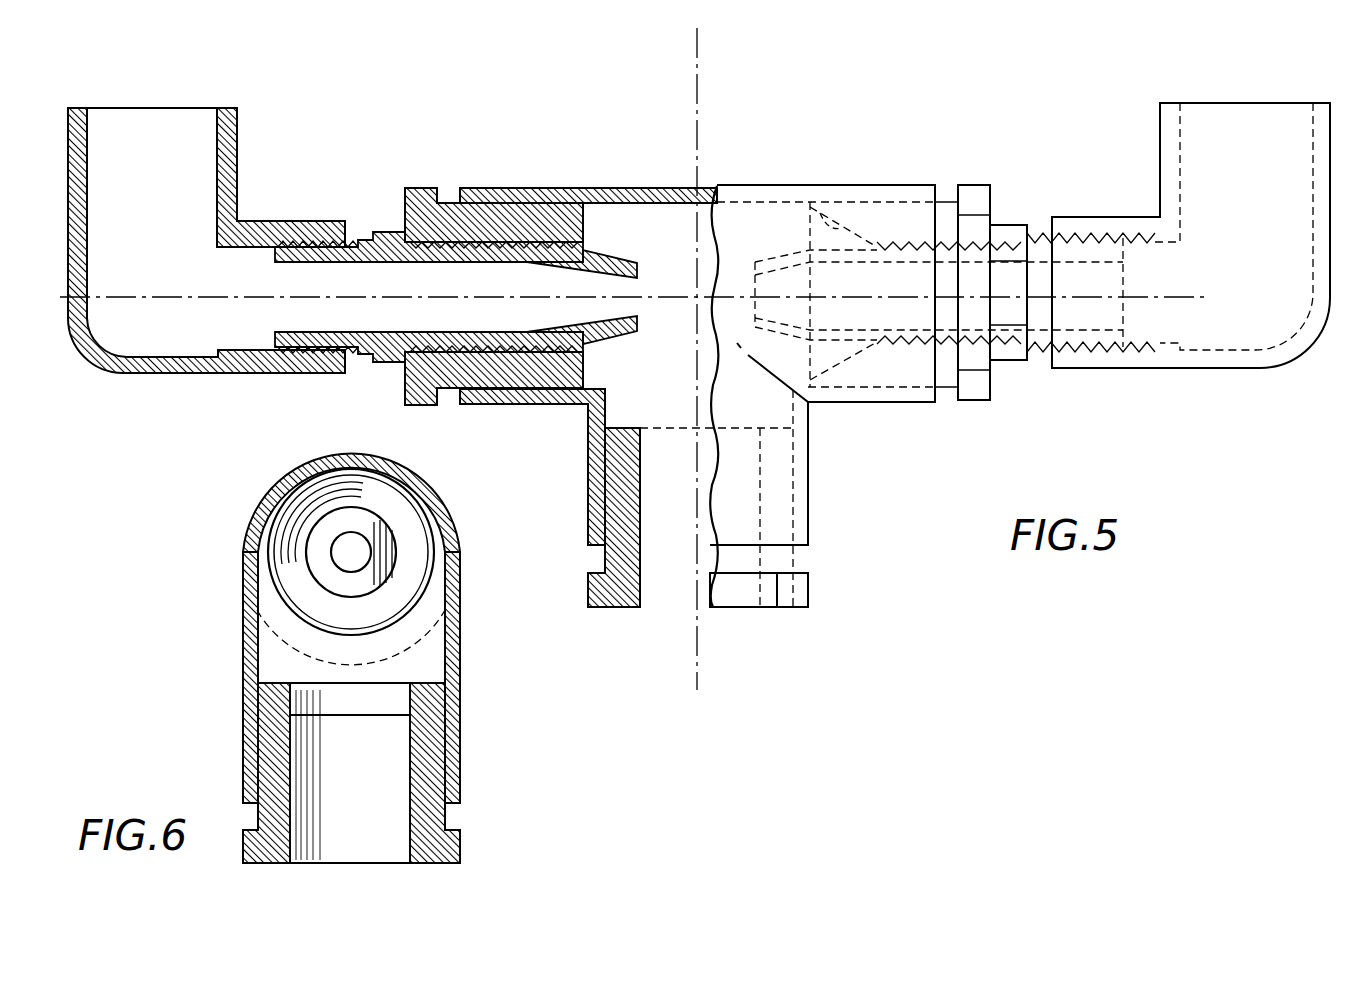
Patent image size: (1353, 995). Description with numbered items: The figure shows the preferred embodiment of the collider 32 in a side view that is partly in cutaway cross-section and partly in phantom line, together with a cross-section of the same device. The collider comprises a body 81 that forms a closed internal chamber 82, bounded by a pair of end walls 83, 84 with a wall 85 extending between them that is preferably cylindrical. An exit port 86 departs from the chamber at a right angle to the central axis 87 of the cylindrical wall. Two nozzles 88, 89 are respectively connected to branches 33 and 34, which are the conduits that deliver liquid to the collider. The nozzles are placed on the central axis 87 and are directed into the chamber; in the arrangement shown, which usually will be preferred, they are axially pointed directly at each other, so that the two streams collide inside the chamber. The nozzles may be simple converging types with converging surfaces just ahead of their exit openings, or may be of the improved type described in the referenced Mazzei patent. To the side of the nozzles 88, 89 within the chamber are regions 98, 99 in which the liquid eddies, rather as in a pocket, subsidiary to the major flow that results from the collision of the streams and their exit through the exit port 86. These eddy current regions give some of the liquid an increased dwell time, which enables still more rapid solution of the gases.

In FIG. 5, the collider 32 is at (822, 460).
In FIG. 6, the collider 32 is at (212, 571).
In FIG. 5, the branch 33 is at (148, 107).
In FIG. 5, the branch 34 is at (1250, 103).
In FIG. 5, the body 81 is at (860, 185).
In FIG. 5, the internal chamber 82 is at (590, 407).
In FIG. 5, the end wall 83 is at (570, 197).
In FIG. 5, the end wall 84 is at (818, 203).
In FIG. 5, the cylinder wall 85 is at (637, 186).
In FIG. 5, the exit port 86 is at (652, 608).
In FIG. 5, the central axis 87 is at (250, 297).
In FIG. 5, the nozzle 88 is at (640, 395).
In FIG. 5, the nozzle 89 is at (757, 262).
In FIG. 5, the eddy current region 98 is at (555, 352).
In FIG. 5, the eddy current region 99 is at (842, 360).